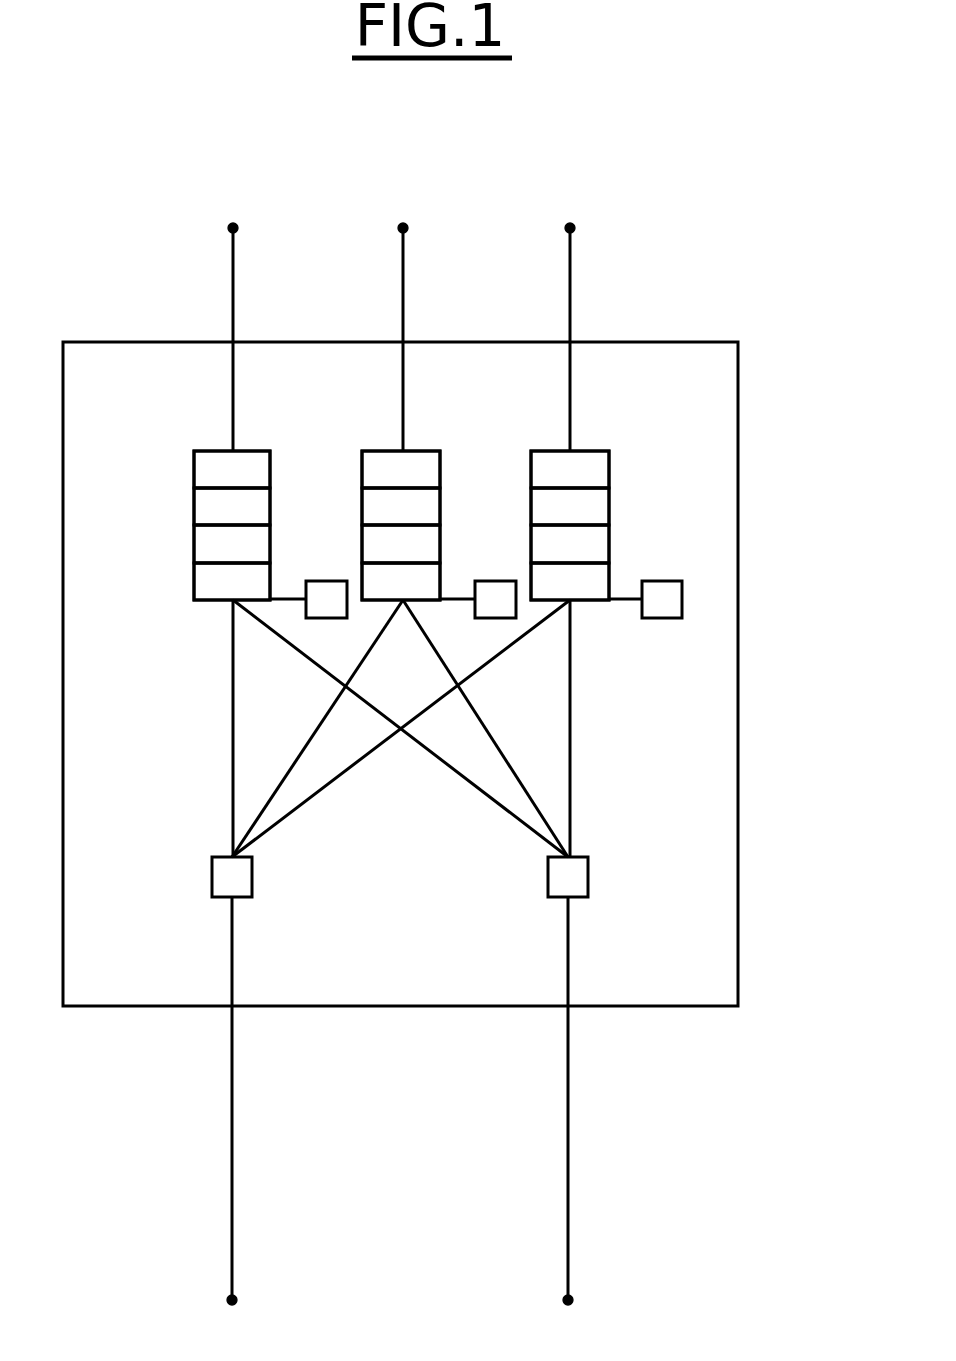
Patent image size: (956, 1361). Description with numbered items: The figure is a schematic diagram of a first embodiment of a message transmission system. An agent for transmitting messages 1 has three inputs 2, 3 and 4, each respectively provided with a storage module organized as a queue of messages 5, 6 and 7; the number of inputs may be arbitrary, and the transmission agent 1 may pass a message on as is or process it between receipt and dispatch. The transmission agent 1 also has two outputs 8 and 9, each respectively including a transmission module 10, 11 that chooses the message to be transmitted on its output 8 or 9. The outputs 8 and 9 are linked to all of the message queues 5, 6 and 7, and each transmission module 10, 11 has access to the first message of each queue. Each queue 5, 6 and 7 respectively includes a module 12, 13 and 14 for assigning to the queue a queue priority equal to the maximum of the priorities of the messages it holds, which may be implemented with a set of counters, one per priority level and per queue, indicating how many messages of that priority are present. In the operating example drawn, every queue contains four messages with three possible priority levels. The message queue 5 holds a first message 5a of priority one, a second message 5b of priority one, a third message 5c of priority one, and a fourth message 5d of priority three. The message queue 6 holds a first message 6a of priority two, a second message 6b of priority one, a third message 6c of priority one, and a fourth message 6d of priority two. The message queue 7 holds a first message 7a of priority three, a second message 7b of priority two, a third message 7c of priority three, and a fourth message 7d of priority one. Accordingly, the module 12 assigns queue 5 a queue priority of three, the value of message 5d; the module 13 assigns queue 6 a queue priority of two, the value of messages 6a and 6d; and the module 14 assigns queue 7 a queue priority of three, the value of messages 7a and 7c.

The agent for transmitting messages 1 is at (740, 671).
The input 2 is at (236, 277).
The input 3 is at (406, 277).
The input 4 is at (573, 277).
The queue of messages 5 is at (254, 436).
The first message 5a is at (216, 603).
The second message 5b is at (271, 542).
The third message 5c is at (271, 505).
The fourth message 5d is at (271, 468).
The queue of messages 6 is at (422, 436).
The first message 6a is at (398, 603).
The second message 6b is at (441, 542).
The third message 6c is at (441, 505).
The fourth message 6d is at (441, 468).
The queue of messages 7 is at (589, 435).
The first message 7a is at (585, 603).
The second message 7b is at (610, 542).
The third message 7c is at (610, 505).
The fourth message 7d is at (610, 468).
The output 8 is at (235, 1097).
The output 9 is at (571, 1097).
The transmission module 10 is at (254, 873).
The transmission module 11 is at (590, 873).
The module for assigning a queue priority 12 is at (325, 619).
The module for assigning a queue priority 13 is at (494, 619).
The module for assigning a queue priority 14 is at (662, 619).